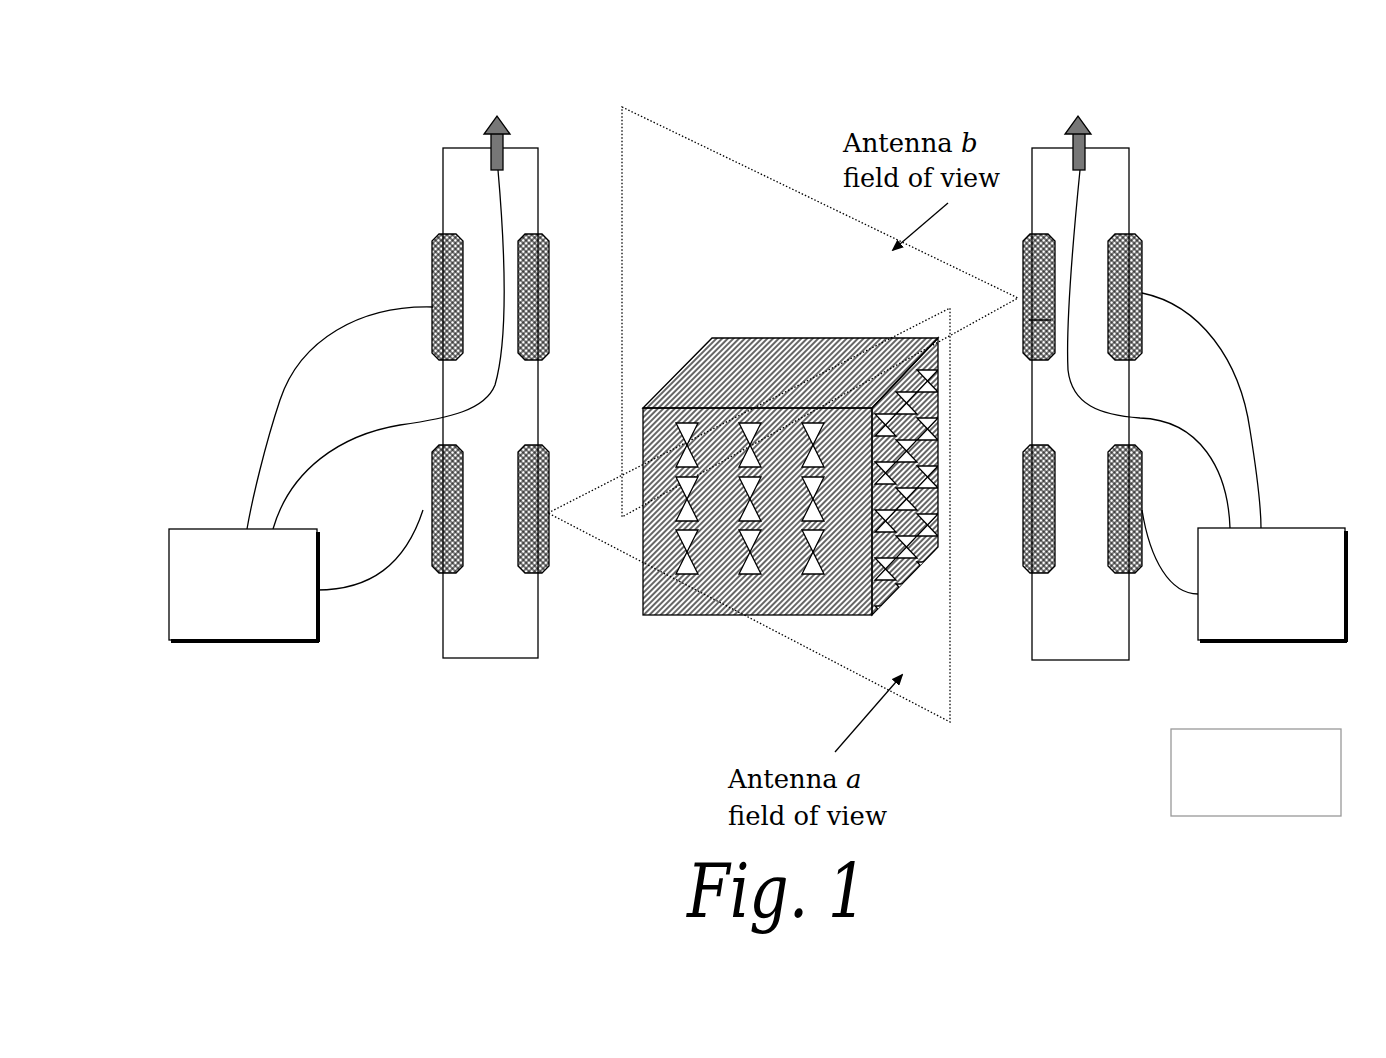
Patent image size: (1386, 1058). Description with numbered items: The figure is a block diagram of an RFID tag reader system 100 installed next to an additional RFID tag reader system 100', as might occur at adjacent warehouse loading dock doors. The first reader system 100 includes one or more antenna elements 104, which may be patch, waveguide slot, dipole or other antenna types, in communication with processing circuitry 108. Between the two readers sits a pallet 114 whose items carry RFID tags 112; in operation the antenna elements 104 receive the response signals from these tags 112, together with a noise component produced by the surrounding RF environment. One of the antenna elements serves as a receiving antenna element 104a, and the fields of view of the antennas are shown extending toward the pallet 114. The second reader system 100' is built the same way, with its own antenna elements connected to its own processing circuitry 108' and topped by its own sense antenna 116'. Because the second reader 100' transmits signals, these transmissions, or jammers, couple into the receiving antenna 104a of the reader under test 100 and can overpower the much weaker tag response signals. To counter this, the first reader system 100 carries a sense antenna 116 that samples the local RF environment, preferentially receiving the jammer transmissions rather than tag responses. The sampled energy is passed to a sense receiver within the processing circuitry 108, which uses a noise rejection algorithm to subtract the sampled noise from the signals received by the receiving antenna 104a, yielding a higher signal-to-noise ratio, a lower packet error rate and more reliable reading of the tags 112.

The RFID tag reader system 100 is at (348, 356).
The additional RFID tag reader system 100' is at (1185, 359).
The antenna elements 104 is at (452, 510).
The receiving antenna element 104a is at (547, 520).
The processing circuitry 108 is at (244, 585).
The processing circuitry of second reader system 108' is at (1272, 585).
The RFID tags 112 is at (804, 576).
The pallet 114 is at (841, 354).
The sense antenna 116 is at (391, 297).
The sense antenna of second reader system 116' is at (1147, 293).